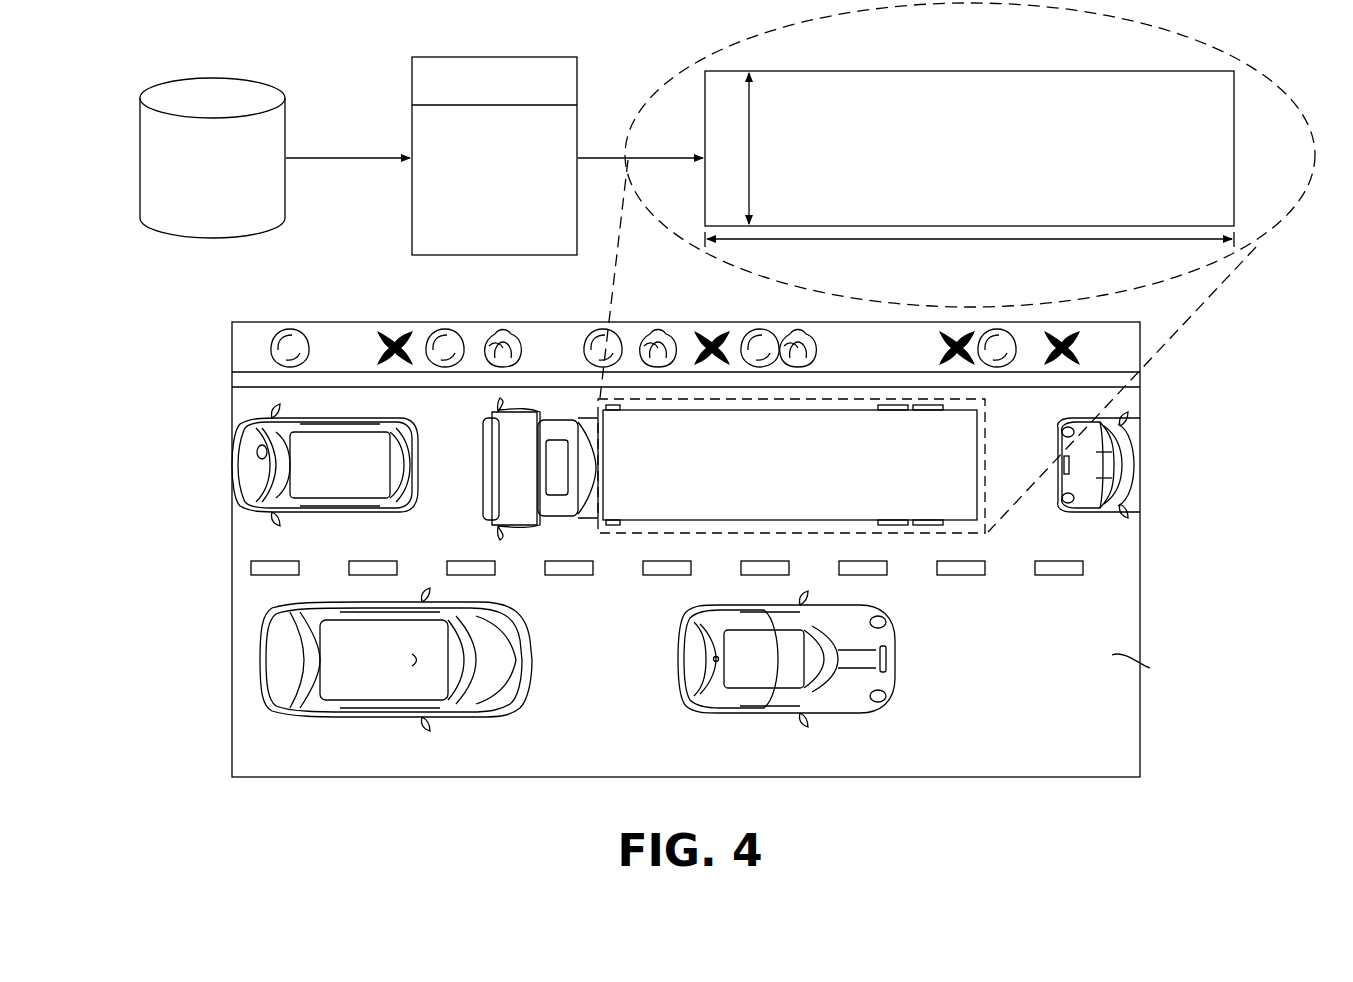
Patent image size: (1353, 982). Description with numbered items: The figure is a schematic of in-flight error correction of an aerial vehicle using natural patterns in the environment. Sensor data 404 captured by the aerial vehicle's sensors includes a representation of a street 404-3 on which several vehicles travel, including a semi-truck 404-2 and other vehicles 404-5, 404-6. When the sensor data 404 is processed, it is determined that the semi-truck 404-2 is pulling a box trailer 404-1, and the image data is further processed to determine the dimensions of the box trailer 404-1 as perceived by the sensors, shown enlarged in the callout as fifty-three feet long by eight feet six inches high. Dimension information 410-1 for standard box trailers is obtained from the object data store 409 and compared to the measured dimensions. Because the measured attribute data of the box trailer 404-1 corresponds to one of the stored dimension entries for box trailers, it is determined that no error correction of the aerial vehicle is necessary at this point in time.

The object data store 409 is at (138, 125).
The dimension information 410-1 is at (410, 118).
The box trailer 404-1 is at (1236, 151).
The semi-truck 404-2 is at (979, 432).
The sensor data 404 is at (1141, 570).
The street 404-3 is at (1150, 668).
The vehicle 404-5 is at (775, 683).
The vehicle 404-6 is at (318, 475).